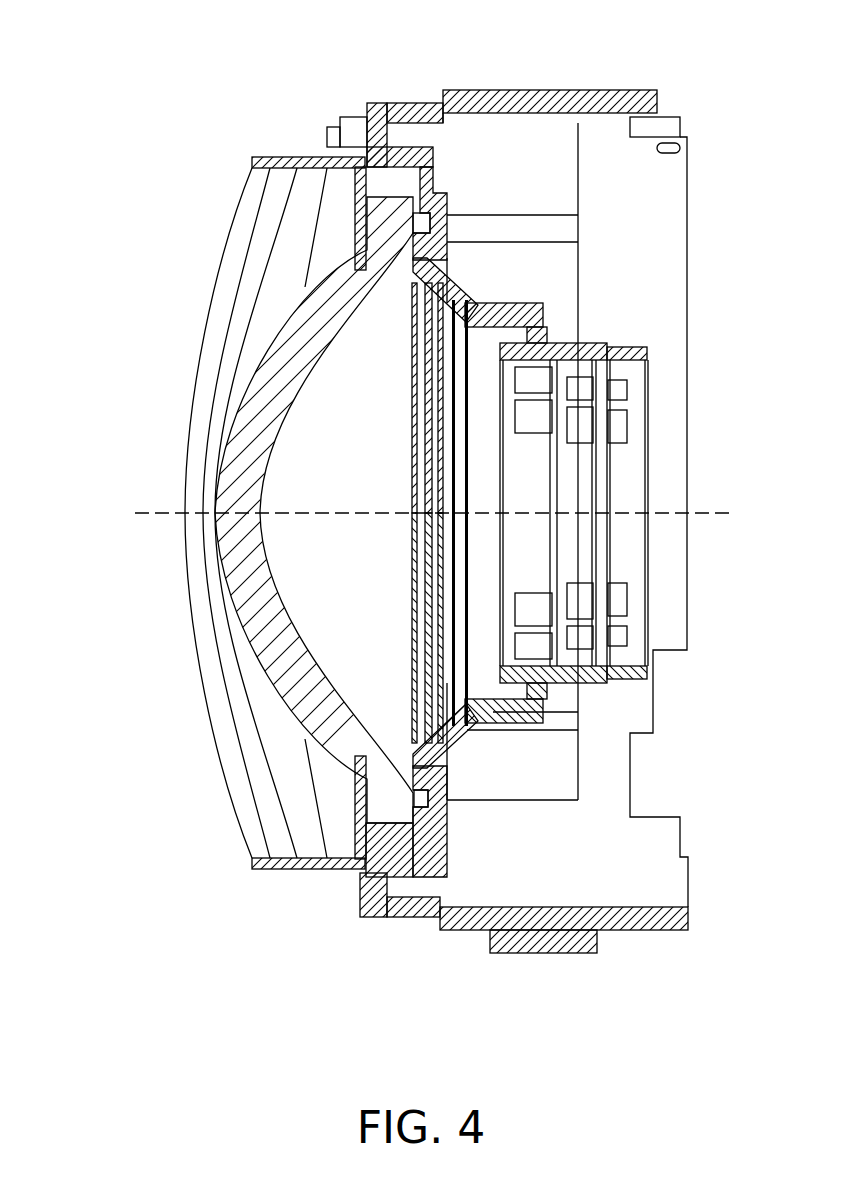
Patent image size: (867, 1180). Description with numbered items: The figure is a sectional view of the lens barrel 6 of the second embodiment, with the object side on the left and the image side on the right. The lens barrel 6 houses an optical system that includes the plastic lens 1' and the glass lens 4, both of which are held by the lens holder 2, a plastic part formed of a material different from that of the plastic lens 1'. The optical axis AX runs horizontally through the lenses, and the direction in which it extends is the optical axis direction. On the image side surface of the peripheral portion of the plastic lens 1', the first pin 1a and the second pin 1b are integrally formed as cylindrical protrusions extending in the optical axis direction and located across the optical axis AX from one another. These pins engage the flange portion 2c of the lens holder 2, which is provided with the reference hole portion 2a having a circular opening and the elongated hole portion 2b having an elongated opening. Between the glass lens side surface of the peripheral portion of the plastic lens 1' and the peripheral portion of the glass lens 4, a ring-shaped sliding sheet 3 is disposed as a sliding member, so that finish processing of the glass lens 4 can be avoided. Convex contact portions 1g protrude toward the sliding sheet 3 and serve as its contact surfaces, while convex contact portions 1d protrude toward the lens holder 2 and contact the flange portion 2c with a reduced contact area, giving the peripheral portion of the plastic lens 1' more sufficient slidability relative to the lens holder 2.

The plastic lens 1' is at (433, 505).
The first pin 1a is at (423, 795).
The second pin 1b is at (415, 215).
The convex contact portions 1d is at (415, 265).
The convex contact portions 1g is at (362, 225).
The lens holder 2 is at (583, 927).
The reference hole portion 2a is at (428, 800).
The elongated hole portion 2b is at (433, 228).
The flange portion 2c is at (428, 822).
The sliding sheet 3 is at (352, 190).
The glass lens 4 is at (243, 703).
The lens barrel 6 is at (255, 95).
The optical axis AX is at (140, 506).